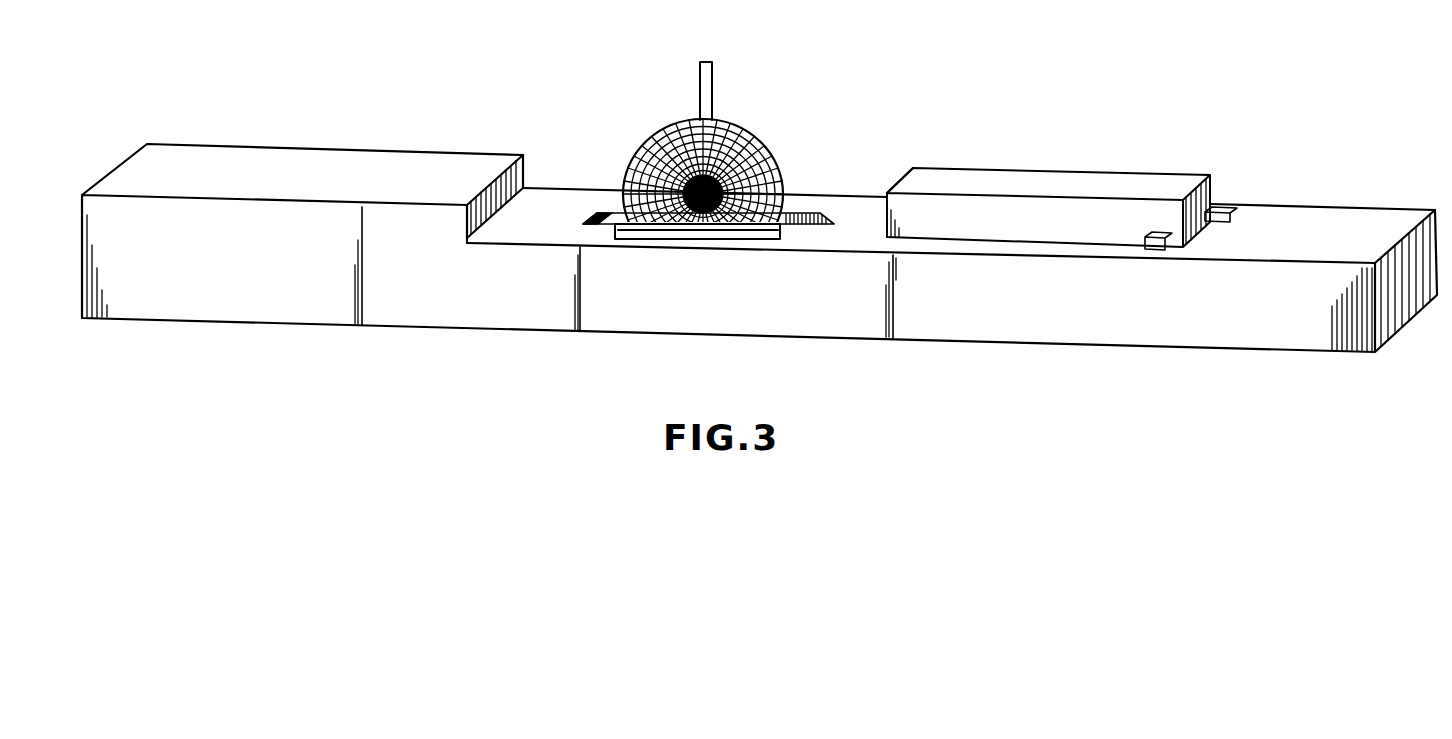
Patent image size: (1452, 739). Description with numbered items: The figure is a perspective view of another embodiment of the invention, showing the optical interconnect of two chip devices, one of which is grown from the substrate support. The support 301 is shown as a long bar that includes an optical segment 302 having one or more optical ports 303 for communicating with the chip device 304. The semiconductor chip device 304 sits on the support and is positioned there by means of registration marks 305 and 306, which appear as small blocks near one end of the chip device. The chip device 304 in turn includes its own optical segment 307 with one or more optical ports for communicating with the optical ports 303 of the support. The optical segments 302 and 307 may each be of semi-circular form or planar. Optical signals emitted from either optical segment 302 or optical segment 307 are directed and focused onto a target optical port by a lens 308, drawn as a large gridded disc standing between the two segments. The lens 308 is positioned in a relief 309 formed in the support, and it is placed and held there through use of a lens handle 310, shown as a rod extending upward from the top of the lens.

The support 301 is at (323, 325).
The optical segment 302 is at (528, 203).
The optical ports 303 is at (507, 157).
The chip device 304 is at (1080, 172).
The registration mark 305 is at (1147, 257).
The registration mark 306 is at (1220, 221).
The optical segment 307 is at (910, 175).
The lens 308 is at (763, 147).
The relief 309 is at (820, 230).
The lens handle 310 is at (713, 73).